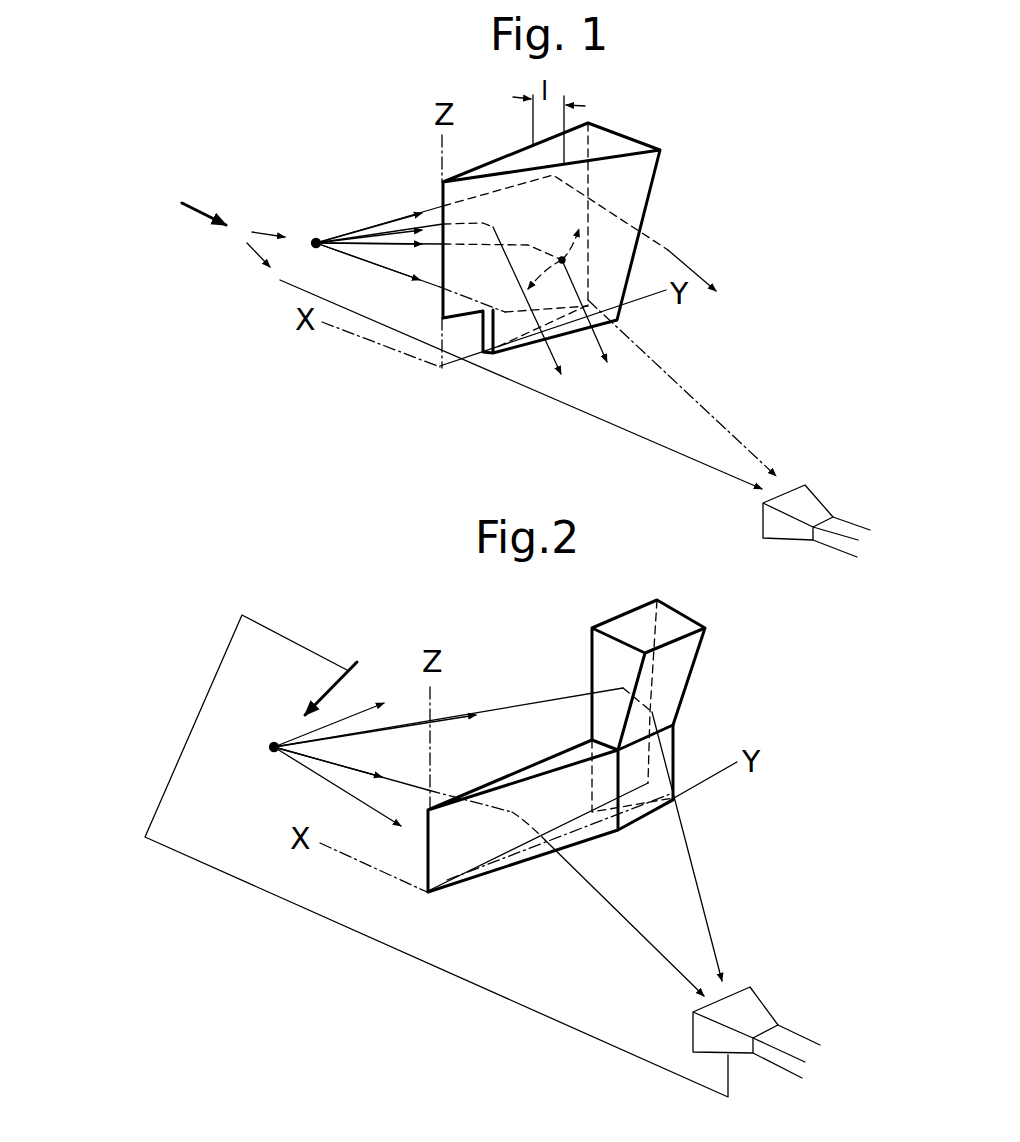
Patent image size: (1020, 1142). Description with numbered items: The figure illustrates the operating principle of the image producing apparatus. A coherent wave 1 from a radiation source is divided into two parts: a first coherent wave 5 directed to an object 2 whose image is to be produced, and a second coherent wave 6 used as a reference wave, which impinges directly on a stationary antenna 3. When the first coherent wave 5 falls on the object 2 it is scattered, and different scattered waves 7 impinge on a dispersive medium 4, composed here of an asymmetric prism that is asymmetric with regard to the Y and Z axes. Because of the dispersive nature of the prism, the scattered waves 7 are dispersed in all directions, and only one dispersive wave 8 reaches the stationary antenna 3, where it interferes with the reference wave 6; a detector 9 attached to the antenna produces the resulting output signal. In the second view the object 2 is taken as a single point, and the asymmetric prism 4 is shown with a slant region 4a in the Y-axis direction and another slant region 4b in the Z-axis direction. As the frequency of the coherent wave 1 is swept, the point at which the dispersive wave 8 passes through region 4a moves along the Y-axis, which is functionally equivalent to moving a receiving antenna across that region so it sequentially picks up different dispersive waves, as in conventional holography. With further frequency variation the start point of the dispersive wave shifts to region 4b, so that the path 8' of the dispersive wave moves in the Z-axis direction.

In FIG. 1, the coherent wave 1 is at (203, 215).
In FIG. 2, the coherent wave 1 is at (323, 690).
In FIG. 1, the object 2 is at (316, 240).
In FIG. 2, the object 2 is at (274, 751).
In FIG. 1, the stationary antenna 3 is at (790, 530).
In FIG. 2, the stationary antenna 3 is at (740, 1012).
In FIG. 1, the dispersive medium 4 is at (643, 172).
In FIG. 2, the dispersive medium 4 is at (675, 748).
In FIG. 2, the slant region 4a is at (473, 857).
In FIG. 2, the slant region 4b is at (683, 660).
In FIG. 1, the first coherent wave 5 is at (266, 232).
In FIG. 1, the second coherent wave 6 is at (360, 313).
In FIG. 2, the second coherent wave 6 is at (310, 913).
In FIG. 1, the scattered waves 7 is at (366, 263).
In FIG. 2, the scattered waves 7 is at (363, 712).
In FIG. 1, the dispersive wave 8 is at (682, 388).
In FIG. 2, the dispersive wave 8 is at (566, 893).
In FIG. 2, the path of dispersive wave 8' is at (686, 834).
In FIG. 1, the detector 9 is at (838, 528).
In FIG. 2, the detector 9 is at (787, 1043).